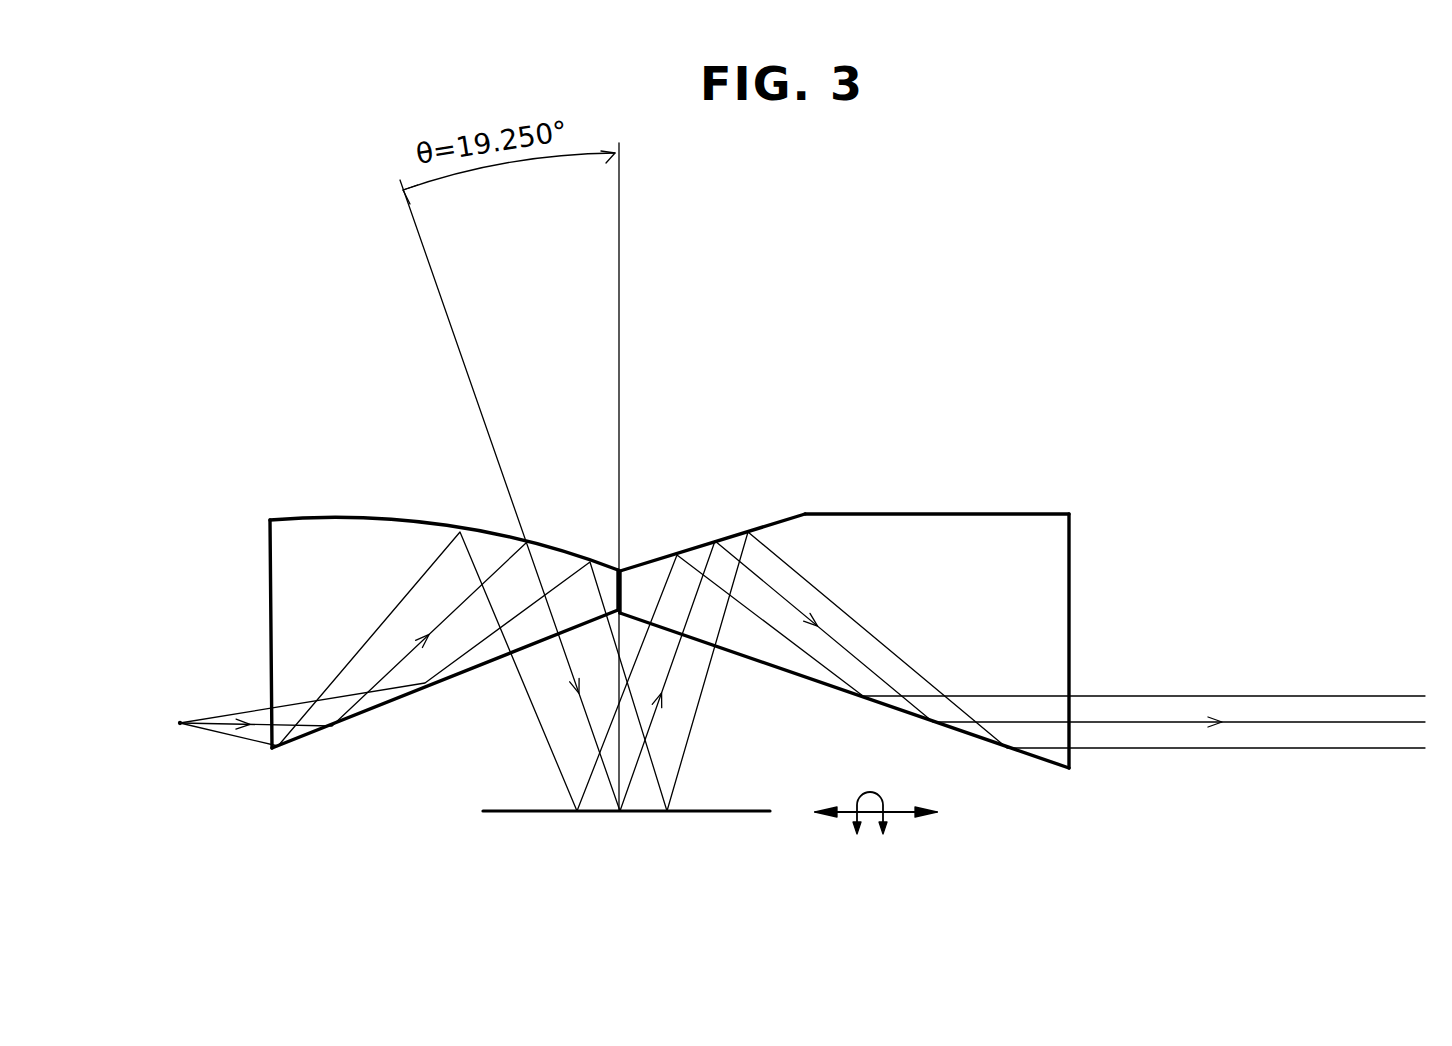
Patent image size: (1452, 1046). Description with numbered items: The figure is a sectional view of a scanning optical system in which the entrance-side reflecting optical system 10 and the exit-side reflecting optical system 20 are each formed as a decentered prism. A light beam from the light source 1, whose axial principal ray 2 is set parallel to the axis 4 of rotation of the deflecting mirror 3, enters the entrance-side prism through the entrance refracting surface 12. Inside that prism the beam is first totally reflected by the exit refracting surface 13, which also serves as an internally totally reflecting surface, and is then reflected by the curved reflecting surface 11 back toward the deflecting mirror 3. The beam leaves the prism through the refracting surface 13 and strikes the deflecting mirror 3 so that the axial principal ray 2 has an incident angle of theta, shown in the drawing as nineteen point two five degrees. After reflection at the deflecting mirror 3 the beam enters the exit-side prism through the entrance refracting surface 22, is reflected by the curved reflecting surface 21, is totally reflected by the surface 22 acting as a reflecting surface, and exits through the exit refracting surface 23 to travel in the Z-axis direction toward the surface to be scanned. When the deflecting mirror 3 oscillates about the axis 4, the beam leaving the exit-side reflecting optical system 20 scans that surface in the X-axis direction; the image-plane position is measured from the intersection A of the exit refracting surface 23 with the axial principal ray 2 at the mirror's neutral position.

The light source 1 is at (180, 725).
The axial principal ray 2 is at (232, 736).
The deflecting mirror 3 is at (640, 815).
The axis of rotation 4 is at (903, 817).
The entrance-side reflecting optical system 10 is at (399, 564).
The curved reflecting surface 11 is at (442, 525).
The entrance refracting surface 12 is at (270, 625).
The exit refracting surface 13 is at (488, 663).
The exit-side reflecting optical system 20 is at (896, 588).
The curved reflecting surface 21 is at (723, 537).
The entrance refracting surface 22 is at (808, 680).
The exit refracting surface 23 is at (1070, 598).
The intersection A is at (1088, 697).